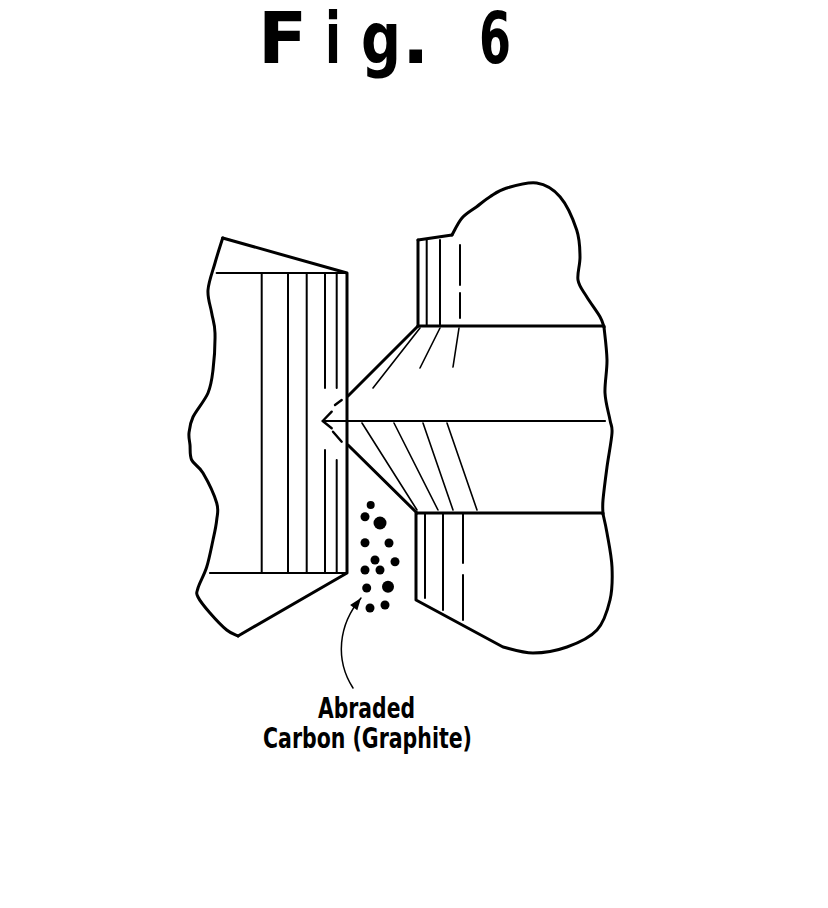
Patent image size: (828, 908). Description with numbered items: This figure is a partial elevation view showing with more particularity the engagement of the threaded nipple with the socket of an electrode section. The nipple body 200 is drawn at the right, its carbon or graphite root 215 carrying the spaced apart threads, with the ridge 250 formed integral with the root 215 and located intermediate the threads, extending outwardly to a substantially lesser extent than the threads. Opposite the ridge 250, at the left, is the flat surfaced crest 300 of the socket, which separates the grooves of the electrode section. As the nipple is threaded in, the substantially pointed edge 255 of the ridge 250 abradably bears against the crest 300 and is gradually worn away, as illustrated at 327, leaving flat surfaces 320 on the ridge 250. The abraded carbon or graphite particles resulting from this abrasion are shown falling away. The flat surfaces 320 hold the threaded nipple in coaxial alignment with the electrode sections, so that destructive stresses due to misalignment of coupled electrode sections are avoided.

The commutator 200 is at (593, 272).
The root 215 is at (418, 295).
The ridge 250 is at (395, 343).
The pointed edge 255 is at (330, 428).
The flat surfaced crest 300 is at (245, 315).
The flat surface 320 is at (350, 408).
The abraded ridge portion 327 is at (333, 394).